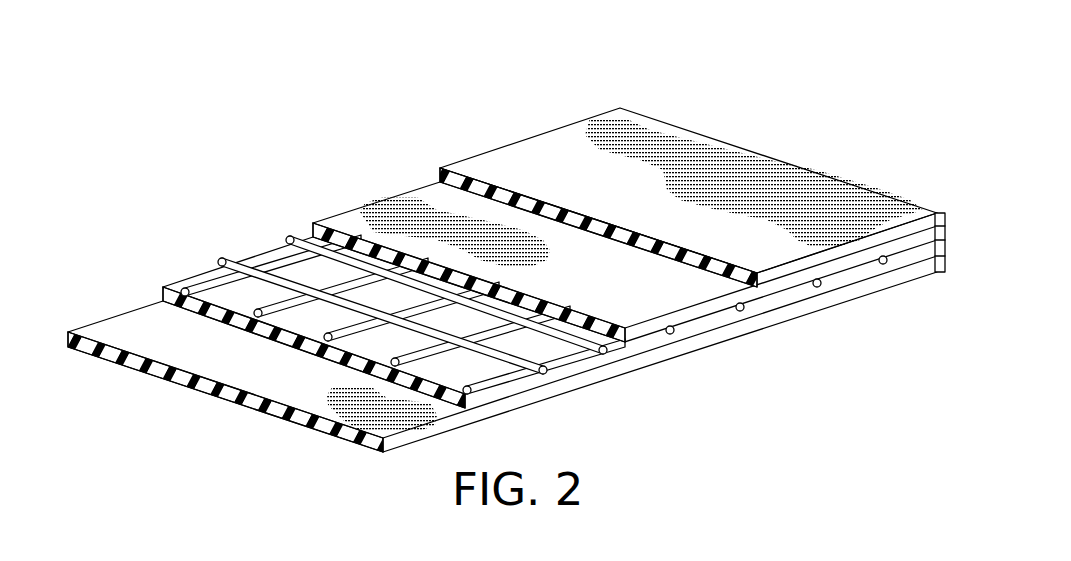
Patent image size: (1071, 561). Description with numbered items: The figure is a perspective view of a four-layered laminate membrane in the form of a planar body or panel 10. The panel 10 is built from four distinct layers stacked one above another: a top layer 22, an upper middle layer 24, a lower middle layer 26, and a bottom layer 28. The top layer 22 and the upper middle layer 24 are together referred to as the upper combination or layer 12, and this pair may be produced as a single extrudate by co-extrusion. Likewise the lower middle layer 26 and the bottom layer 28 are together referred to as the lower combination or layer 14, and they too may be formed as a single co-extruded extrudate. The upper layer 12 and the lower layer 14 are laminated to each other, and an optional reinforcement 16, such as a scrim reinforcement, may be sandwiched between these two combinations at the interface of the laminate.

The panel 10 is at (528, 241).
The upper combination layer 12 is at (947, 227).
The lower combination layer 14 is at (947, 250).
The reinforcement 16 is at (277, 238).
The top layer 22 is at (500, 168).
The upper middle layer 24 is at (385, 205).
The lower middle layer 26 is at (230, 297).
The bottom layer 28 is at (172, 340).